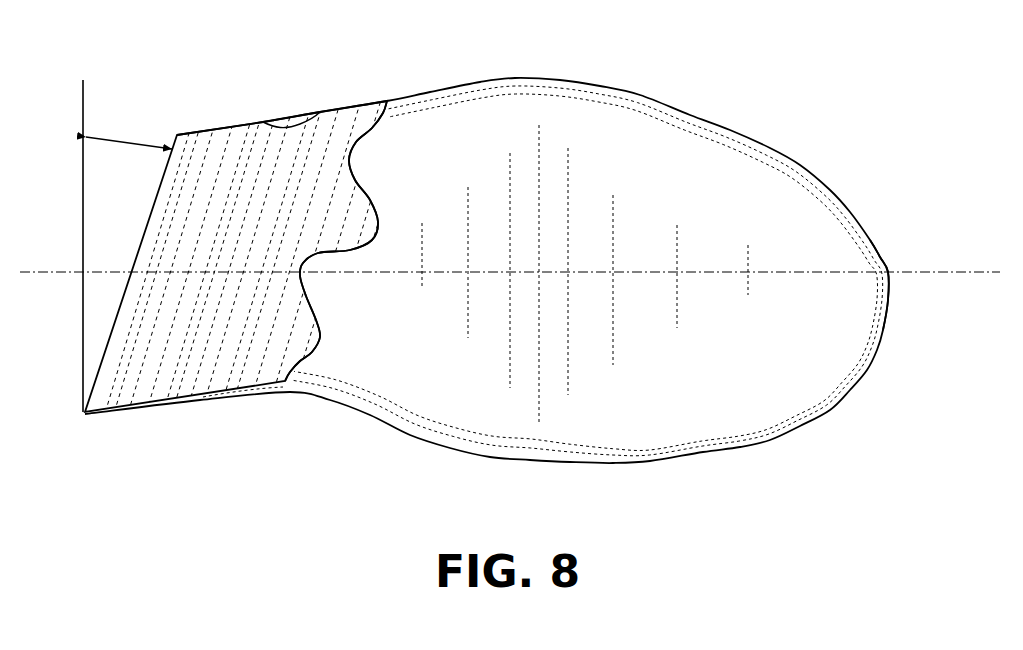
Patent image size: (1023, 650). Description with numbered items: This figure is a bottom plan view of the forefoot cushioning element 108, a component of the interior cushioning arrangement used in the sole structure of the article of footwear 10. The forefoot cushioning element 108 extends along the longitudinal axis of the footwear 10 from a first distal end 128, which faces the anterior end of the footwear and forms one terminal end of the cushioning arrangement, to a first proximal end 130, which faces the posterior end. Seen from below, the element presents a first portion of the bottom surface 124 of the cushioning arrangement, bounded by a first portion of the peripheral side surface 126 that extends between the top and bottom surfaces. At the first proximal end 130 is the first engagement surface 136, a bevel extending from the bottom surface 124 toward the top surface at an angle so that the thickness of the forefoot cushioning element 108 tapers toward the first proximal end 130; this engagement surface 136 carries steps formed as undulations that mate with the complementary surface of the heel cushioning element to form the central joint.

The article of footwear 10 is at (965, 271).
The forefoot cushioning element 108 is at (790, 110).
The bottom surface 124 is at (645, 405).
The peripheral side surface 126 is at (703, 453).
The first distal end 128 is at (890, 273).
The first proximal end 130 is at (143, 238).
The first engagement surface 136 is at (248, 340).